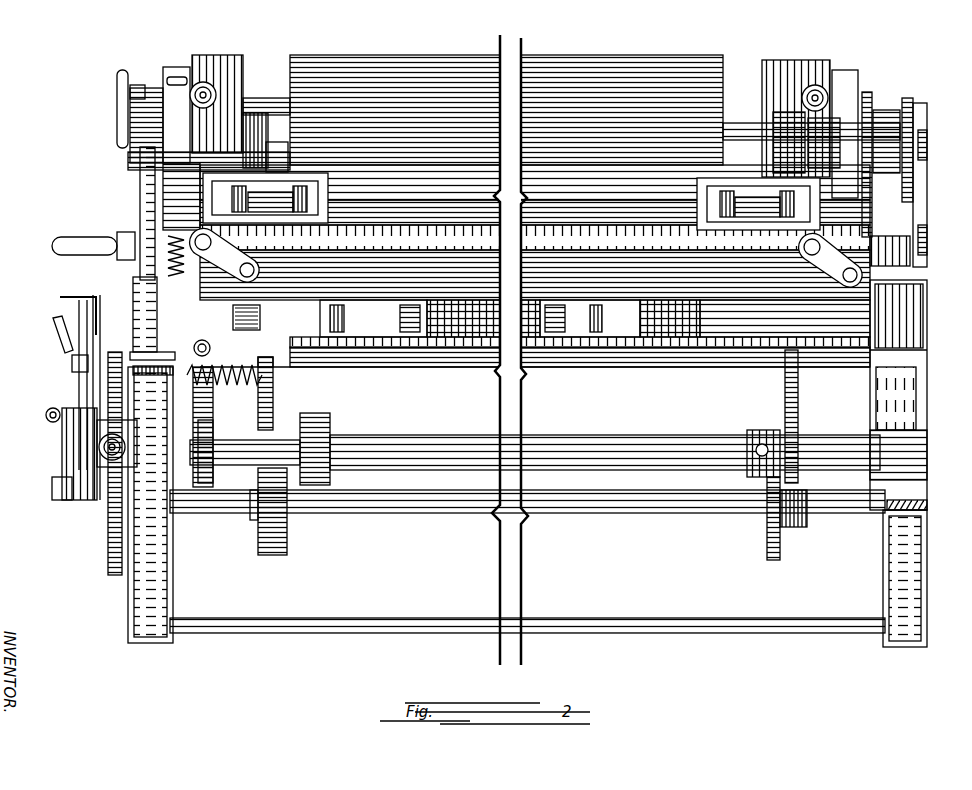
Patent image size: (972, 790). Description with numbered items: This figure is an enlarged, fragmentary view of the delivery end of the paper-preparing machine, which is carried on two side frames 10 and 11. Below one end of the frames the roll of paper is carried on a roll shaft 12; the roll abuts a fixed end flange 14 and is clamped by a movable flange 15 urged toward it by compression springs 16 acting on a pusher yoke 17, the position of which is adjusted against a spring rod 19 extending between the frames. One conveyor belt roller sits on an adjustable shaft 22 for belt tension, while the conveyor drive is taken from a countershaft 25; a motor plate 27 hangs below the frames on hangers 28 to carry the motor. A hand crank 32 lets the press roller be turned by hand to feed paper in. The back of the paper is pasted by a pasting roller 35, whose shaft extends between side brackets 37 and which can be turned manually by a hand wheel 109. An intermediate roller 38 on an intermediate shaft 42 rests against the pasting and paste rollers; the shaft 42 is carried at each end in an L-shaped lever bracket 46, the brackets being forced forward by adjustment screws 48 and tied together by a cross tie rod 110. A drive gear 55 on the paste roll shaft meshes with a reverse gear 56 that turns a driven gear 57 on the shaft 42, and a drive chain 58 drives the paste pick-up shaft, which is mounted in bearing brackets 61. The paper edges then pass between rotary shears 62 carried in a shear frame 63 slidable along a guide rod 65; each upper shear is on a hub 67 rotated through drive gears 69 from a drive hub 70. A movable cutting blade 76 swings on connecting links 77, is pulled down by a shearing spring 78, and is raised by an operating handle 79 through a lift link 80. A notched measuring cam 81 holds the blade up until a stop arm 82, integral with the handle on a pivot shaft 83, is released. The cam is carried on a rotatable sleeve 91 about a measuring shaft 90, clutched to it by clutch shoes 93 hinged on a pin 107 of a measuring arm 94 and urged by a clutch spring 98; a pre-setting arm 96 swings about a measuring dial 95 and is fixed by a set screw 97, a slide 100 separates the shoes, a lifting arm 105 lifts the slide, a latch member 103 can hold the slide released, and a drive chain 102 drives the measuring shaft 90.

The side frame 10 is at (160, 258).
The side frame 11 is at (890, 336).
The roll shaft 12 is at (230, 514).
The fixed end flange 14 is at (782, 554).
The movable flange 15 is at (282, 556).
The compression springs 16 is at (252, 386).
The pusher yoke 17 is at (274, 411).
The spring rod 19 is at (274, 386).
The adjustable shaft 22 is at (152, 253).
The countershaft 25 is at (430, 442).
The motor plate 27 is at (406, 626).
The hangers 28 is at (160, 588).
The hand crank 32 is at (82, 255).
The pasting roller 35 is at (291, 156).
The side brackets 37 is at (178, 67).
The intermediate roller 38 is at (430, 58).
The intermediate shaft 42 is at (275, 98).
The L-shaped lever bracket 46 is at (205, 62).
The adjustment screws 48 is at (212, 84).
The drive gear 55 is at (880, 228).
The reverse gear 56 is at (878, 175).
The driven gear 57 is at (872, 99).
The drive chain 58 is at (927, 126).
The bearing brackets 61 is at (913, 107).
The rotary shears 62 is at (328, 190).
The shear frame 63 is at (200, 182).
The guide rod 65 is at (545, 290).
The hub 67 is at (268, 222).
The drive gears 69 is at (778, 226).
The drive hub 70 is at (382, 303).
The movable cutting blade 76 is at (438, 242).
The connecting links 77 is at (190, 238).
The shearing spring 78 is at (180, 250).
The operating handle 79 is at (212, 350).
The lift link 80 is at (72, 361).
The notched measuring cam 81 is at (213, 481).
The stop arm 82 is at (206, 415).
The pivot shaft 83 is at (115, 322).
The measuring shaft 90 is at (282, 440).
The rotatable sleeve 91 is at (186, 472).
The clutch shoes 93 is at (62, 441).
The measuring arm 94 is at (58, 298).
The measuring dial 95 is at (108, 531).
The pre-setting arm 96 is at (99, 455).
The set screw 97 is at (55, 486).
The clutch spring 98 is at (46, 416).
The slide 100 is at (77, 318).
The drive chain 102 is at (785, 396).
The latch member 103 is at (60, 340).
The lifting arm 105 is at (95, 315).
The pin 107 is at (57, 498).
The hand wheel 109 is at (117, 90).
The cross tie rod 110 is at (690, 127).